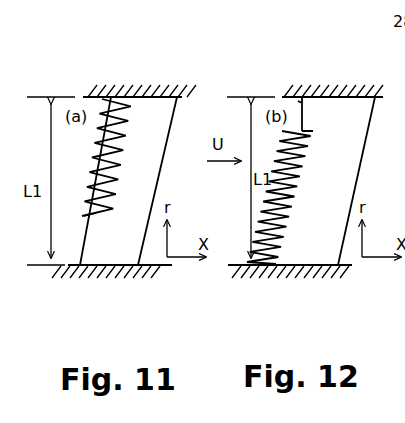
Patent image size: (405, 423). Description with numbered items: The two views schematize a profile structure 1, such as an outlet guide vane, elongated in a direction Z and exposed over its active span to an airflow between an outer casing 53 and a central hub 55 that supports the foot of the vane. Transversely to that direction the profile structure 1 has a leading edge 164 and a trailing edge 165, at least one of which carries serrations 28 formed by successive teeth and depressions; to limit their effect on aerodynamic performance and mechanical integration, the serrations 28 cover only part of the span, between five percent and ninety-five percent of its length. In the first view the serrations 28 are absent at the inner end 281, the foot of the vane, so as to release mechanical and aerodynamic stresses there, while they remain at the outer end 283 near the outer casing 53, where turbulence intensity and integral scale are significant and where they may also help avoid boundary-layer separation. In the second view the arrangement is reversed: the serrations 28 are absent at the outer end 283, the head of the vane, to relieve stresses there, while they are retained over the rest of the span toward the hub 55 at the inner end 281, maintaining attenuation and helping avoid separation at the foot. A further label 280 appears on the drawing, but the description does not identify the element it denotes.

In FIG. 11, the profile structure 1 is at (148, 138).
In FIG. 12, the profile structure 1 is at (336, 92).
In FIG. 11, the serrations 28 is at (80, 211).
In FIG. 12, the serrations 28 is at (271, 153).
In FIG. 11, the outer casing 53 is at (160, 92).
In FIG. 12, the outer casing 53 is at (356, 92).
In FIG. 11, the central hub 55 is at (128, 272).
In FIG. 12, the central hub 55 is at (287, 270).
In FIG. 11, the leading edge 164 is at (98, 176).
In FIG. 11, the trailing edge 165 is at (158, 180).
In FIG. 11, the stator wall 280 is at (132, 52).
In FIG. 11, the inner end 281 is at (85, 272).
In FIG. 11, the outer end 283 is at (120, 97).
In FIG. 12, the outer end 283 is at (299, 101).